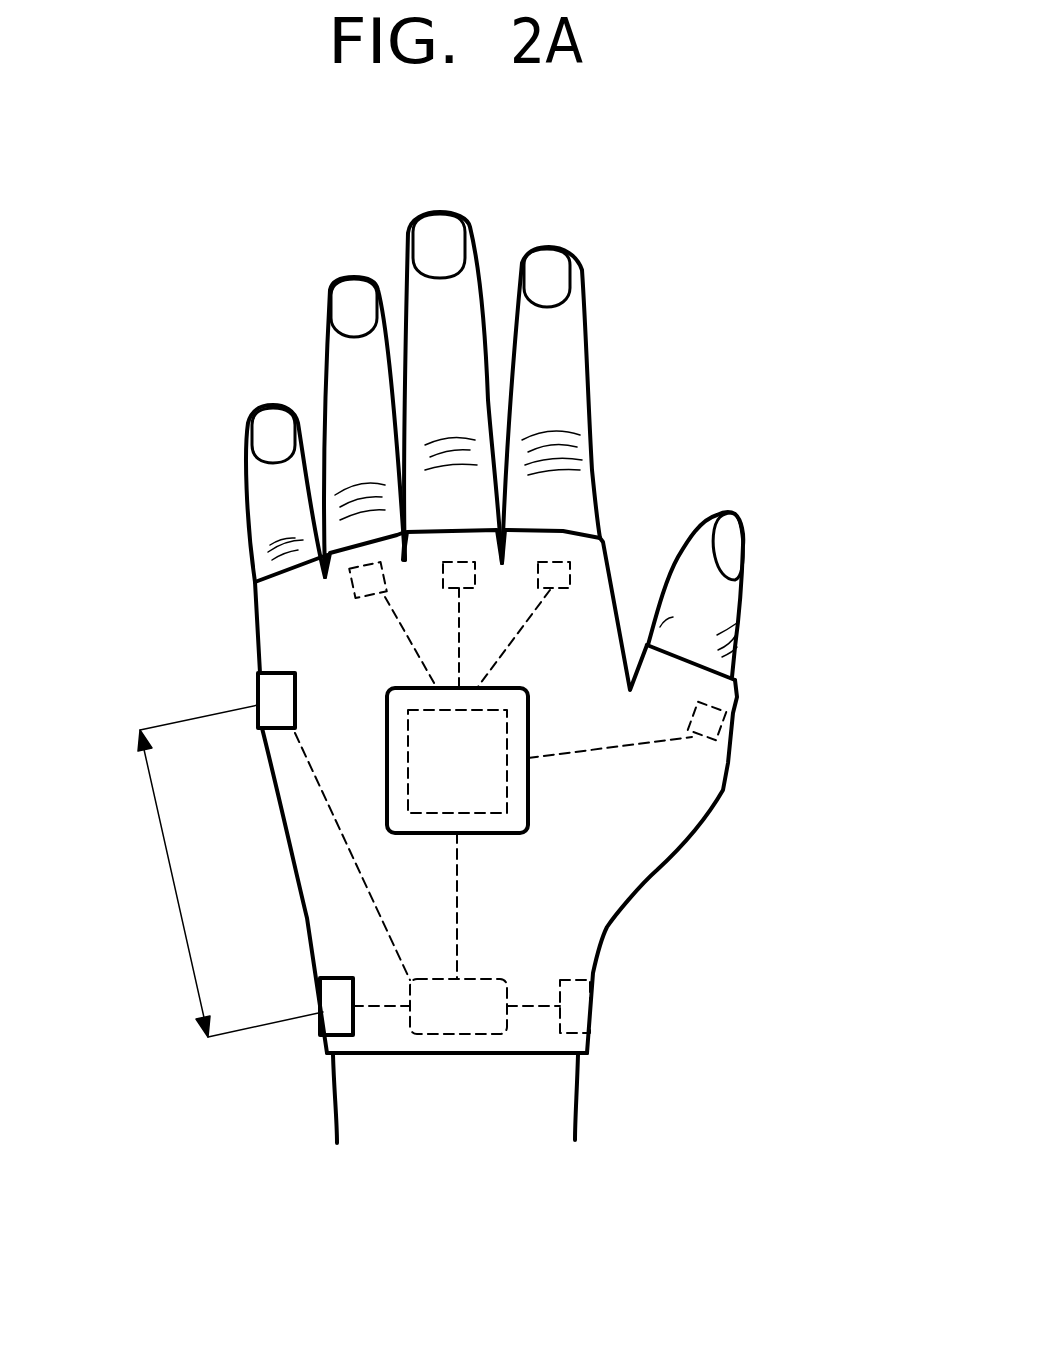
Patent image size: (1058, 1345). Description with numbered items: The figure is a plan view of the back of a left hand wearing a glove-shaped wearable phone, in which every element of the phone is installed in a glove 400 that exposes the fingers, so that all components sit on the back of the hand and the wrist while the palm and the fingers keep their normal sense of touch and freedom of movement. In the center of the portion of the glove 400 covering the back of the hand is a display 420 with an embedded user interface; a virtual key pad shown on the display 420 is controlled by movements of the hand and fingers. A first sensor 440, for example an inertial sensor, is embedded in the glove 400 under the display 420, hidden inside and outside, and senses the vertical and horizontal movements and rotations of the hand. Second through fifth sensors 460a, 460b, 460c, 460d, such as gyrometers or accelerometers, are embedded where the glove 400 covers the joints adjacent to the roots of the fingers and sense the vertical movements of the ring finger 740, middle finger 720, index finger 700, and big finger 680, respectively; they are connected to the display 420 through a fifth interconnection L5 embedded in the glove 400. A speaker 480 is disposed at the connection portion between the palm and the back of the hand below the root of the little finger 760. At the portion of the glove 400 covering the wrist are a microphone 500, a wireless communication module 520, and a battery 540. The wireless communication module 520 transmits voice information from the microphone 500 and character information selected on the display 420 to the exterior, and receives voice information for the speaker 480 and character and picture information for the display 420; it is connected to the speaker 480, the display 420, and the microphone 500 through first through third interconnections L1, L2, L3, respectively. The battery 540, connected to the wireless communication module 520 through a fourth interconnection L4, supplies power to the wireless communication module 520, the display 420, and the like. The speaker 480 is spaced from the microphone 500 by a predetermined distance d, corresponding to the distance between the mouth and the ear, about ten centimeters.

The glove 400 is at (612, 563).
The display 420 is at (528, 800).
The first sensor 440 is at (477, 813).
The second sensor 460a is at (352, 587).
The third sensor 460b is at (463, 560).
The fourth sensor 460c is at (563, 562).
The fifth sensor 460d is at (727, 713).
The speaker 480 is at (270, 697).
The microphone 500 is at (333, 1006).
The wireless communication module 520 is at (450, 1035).
The battery 540 is at (590, 1009).
The big finger 680 is at (730, 545).
The index finger 700 is at (553, 267).
The middle finger 720 is at (443, 228).
The ring finger 740 is at (348, 290).
The little finger 760 is at (260, 415).
The first interconnection L1 is at (320, 793).
The second interconnection L2 is at (457, 920).
The third interconnection L3 is at (377, 1008).
The fourth interconnection L4 is at (523, 1010).
The fifth interconnection L5 is at (657, 740).
The distance d is at (230, 871).